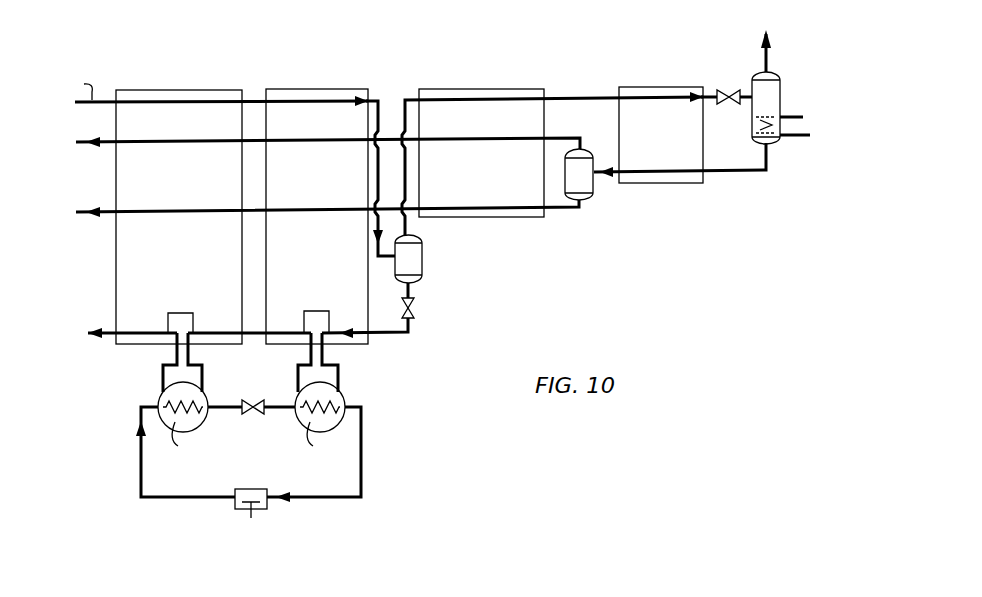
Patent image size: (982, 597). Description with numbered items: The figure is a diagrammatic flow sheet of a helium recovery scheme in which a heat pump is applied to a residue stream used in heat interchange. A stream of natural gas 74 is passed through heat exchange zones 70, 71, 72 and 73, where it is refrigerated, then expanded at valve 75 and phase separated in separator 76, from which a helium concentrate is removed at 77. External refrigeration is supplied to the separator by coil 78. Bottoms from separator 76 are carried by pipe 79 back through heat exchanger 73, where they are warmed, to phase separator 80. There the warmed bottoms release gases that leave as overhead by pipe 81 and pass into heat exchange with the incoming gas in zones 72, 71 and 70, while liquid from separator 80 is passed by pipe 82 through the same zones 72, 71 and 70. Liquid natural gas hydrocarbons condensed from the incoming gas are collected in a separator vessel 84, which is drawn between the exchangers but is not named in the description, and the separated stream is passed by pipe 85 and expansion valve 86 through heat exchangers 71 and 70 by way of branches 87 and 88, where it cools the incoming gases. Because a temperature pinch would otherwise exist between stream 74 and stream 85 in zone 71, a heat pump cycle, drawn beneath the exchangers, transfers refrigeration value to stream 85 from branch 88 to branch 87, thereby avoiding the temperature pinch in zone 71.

The heat exchange zone 70 is at (190, 173).
The heat exchange zone 71 is at (322, 170).
The heat exchange zone 72 is at (487, 170).
The heat exchanger 73 is at (669, 138).
The stream of natural gas 74 is at (88, 103).
The valve 75 is at (738, 91).
The separator 76 is at (772, 90).
The helium concentrate outlet 77 is at (770, 38).
The coil 78 is at (795, 117).
The pipe 79 is at (752, 172).
The phase separator 80 is at (588, 185).
The pipe 81 is at (581, 136).
The pipe 82 is at (572, 208).
The separator vessel 84 is at (415, 252).
The pipe 85 is at (409, 287).
The expansion valve 86 is at (414, 308).
The branch 87 is at (338, 368).
The branch 88 is at (204, 370).